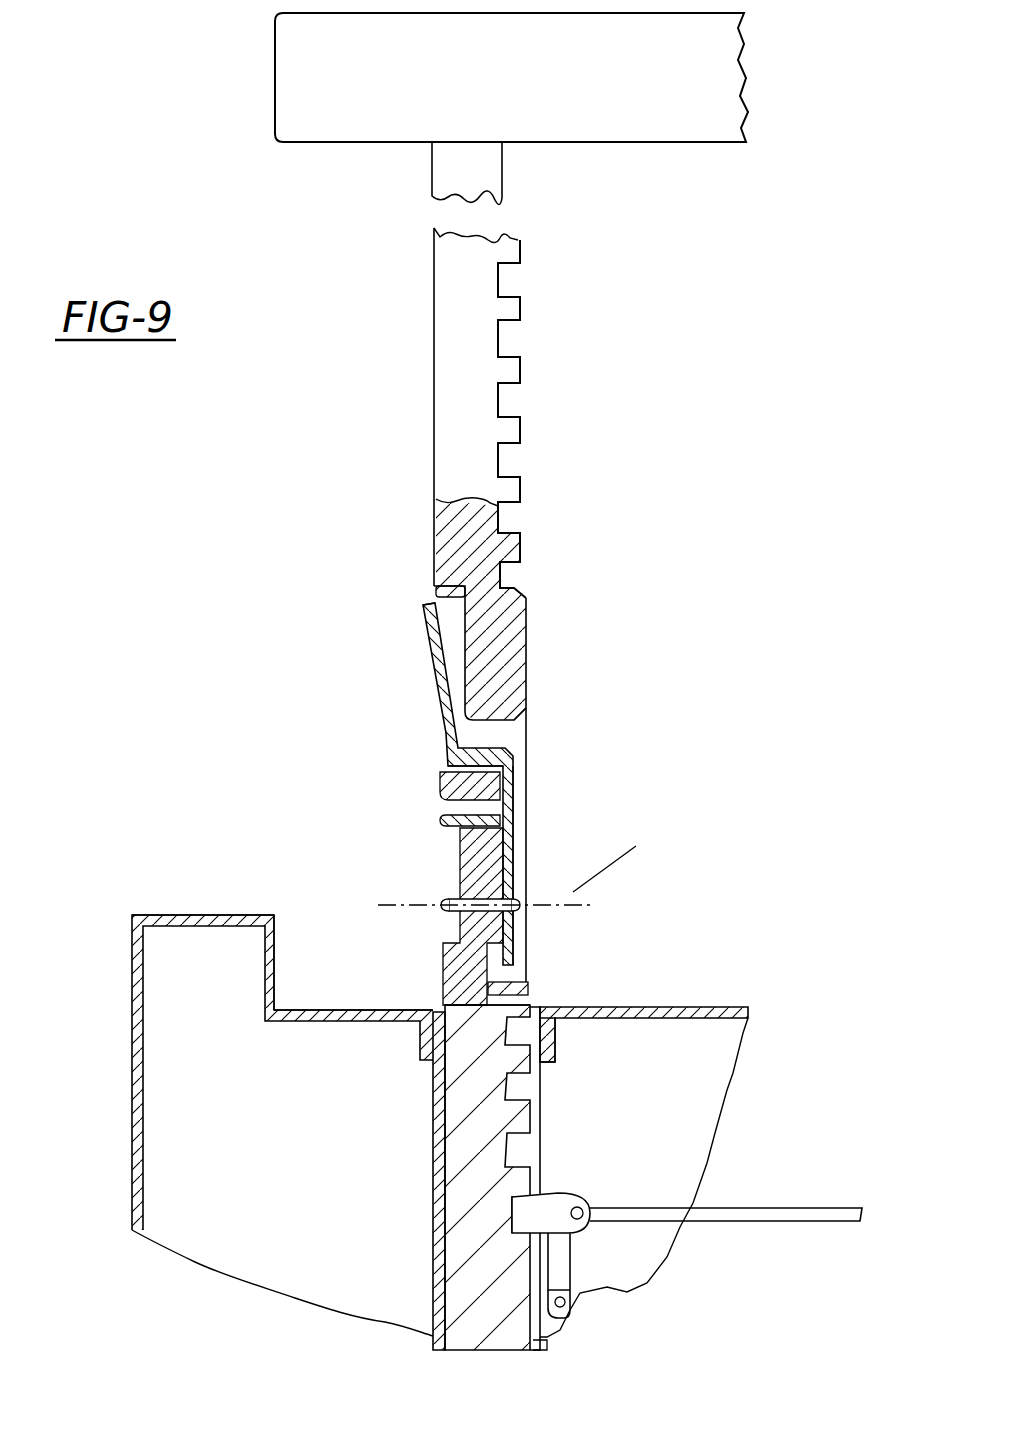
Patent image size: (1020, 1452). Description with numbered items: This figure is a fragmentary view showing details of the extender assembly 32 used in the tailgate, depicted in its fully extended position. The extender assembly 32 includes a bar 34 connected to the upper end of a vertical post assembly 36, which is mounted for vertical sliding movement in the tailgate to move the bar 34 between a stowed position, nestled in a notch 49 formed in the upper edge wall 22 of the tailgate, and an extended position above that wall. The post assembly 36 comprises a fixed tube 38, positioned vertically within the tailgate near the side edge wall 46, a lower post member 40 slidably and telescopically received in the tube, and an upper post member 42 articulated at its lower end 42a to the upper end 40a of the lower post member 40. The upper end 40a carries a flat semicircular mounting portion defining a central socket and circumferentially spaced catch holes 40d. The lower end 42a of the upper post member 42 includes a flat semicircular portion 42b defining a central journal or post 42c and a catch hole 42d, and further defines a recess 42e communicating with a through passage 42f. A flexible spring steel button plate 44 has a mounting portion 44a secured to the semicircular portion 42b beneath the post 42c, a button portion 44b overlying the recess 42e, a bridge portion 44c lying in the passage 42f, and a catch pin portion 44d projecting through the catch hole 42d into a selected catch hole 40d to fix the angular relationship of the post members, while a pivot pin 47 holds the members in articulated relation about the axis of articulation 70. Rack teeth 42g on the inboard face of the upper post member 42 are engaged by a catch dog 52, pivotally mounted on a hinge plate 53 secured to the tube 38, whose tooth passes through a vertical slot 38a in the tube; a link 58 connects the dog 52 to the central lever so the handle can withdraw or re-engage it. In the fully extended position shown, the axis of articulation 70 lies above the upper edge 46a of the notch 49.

The upper edge wall 22 is at (200, 912).
The extender assembly 32 is at (262, 125).
The bar 34 is at (646, 74).
The vertical post assembly 36 is at (405, 466).
The fixed tube 38 is at (505, 1178).
The vertical slot 38a is at (543, 1103).
The lower post member 40 is at (422, 1056).
The upper end of lower post member 40a is at (442, 978).
The catch holes 40d is at (448, 791).
The upper post member 42 is at (496, 605).
The lower end of upper post member 42a is at (528, 660).
The flat semicircular portion 42b is at (514, 160).
The journal or post 42c is at (446, 930).
The catch hole 42d is at (525, 820).
The recess 42e is at (452, 583).
The through passage 42f is at (528, 722).
The rack teeth 42g is at (521, 366).
The flexible spring steel button plate 44 is at (477, 784).
The mounting portion 44a is at (525, 778).
The access or button portion 44b is at (428, 627).
The bridge portion 44c is at (447, 750).
The catch pin portion 44d is at (446, 831).
The side edge wall 46 is at (244, 1076).
The upper edge of the notch 46a is at (340, 1012).
The pivot pin 47 is at (448, 893).
The notch 49 is at (278, 922).
The catch dog 52 is at (562, 1193).
The hinge plate 53 is at (577, 1297).
The link 58 is at (758, 1207).
The axis of articulation 70 is at (511, 863).